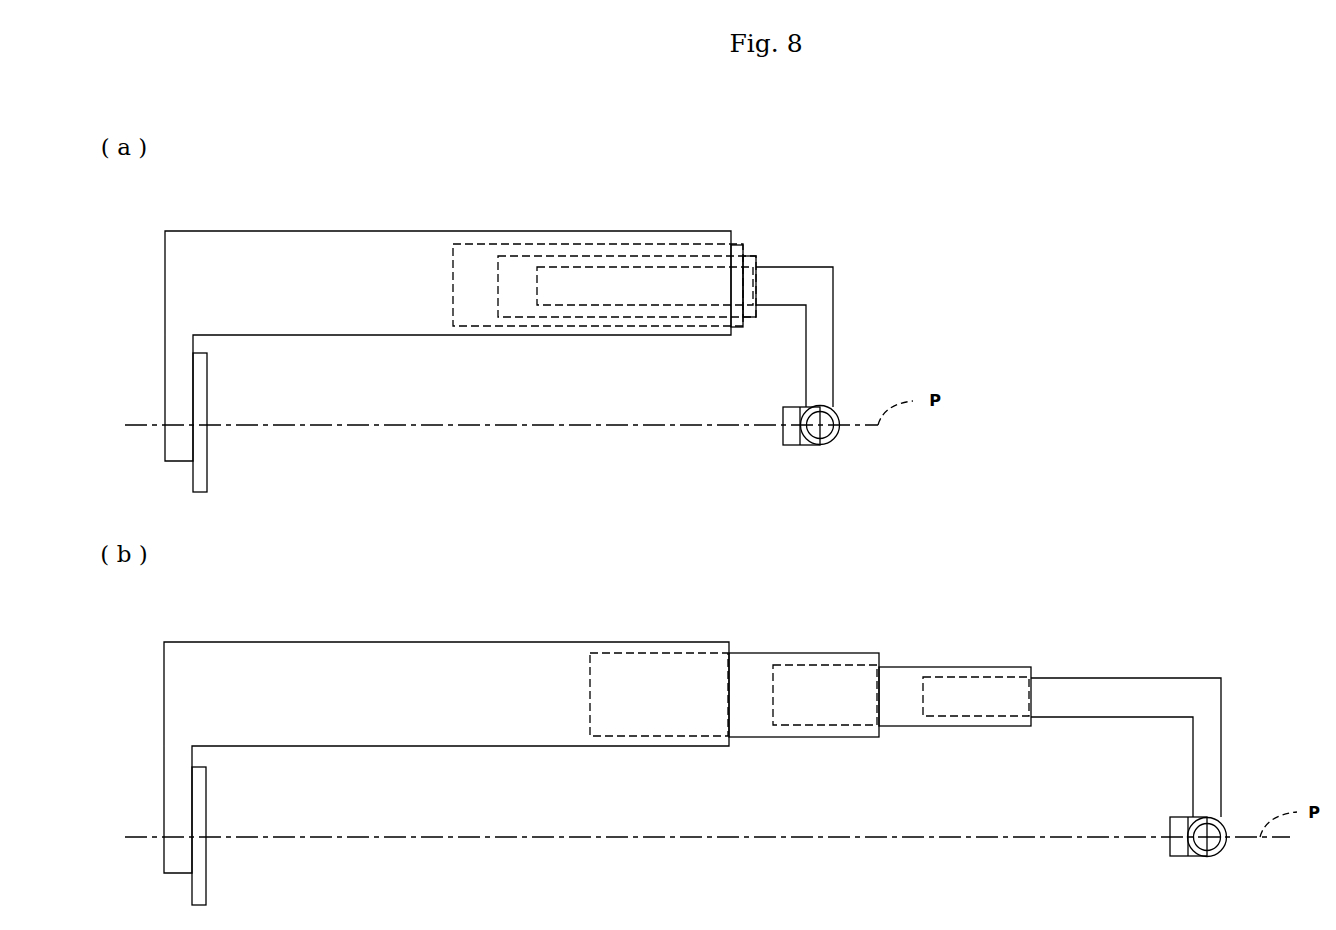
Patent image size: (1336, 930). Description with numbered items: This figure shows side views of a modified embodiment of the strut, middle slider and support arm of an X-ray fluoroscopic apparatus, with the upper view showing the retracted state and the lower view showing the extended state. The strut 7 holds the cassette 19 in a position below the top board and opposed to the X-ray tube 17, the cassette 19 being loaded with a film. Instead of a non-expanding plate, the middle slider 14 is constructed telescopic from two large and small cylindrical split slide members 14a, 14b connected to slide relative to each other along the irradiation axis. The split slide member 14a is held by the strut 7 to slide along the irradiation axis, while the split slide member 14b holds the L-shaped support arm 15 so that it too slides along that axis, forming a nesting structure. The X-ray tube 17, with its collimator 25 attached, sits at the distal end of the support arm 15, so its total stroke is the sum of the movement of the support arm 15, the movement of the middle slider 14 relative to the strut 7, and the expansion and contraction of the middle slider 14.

The strut 7 is at (207, 231).
The middle slider 14 is at (880, 455).
The split slide member 14a is at (744, 250).
The split slide member 14b is at (887, 476).
The support arm 15 is at (836, 302).
The X-ray tube 17 is at (840, 413).
The cassette 19 is at (208, 375).
The collimator 25 is at (792, 405).